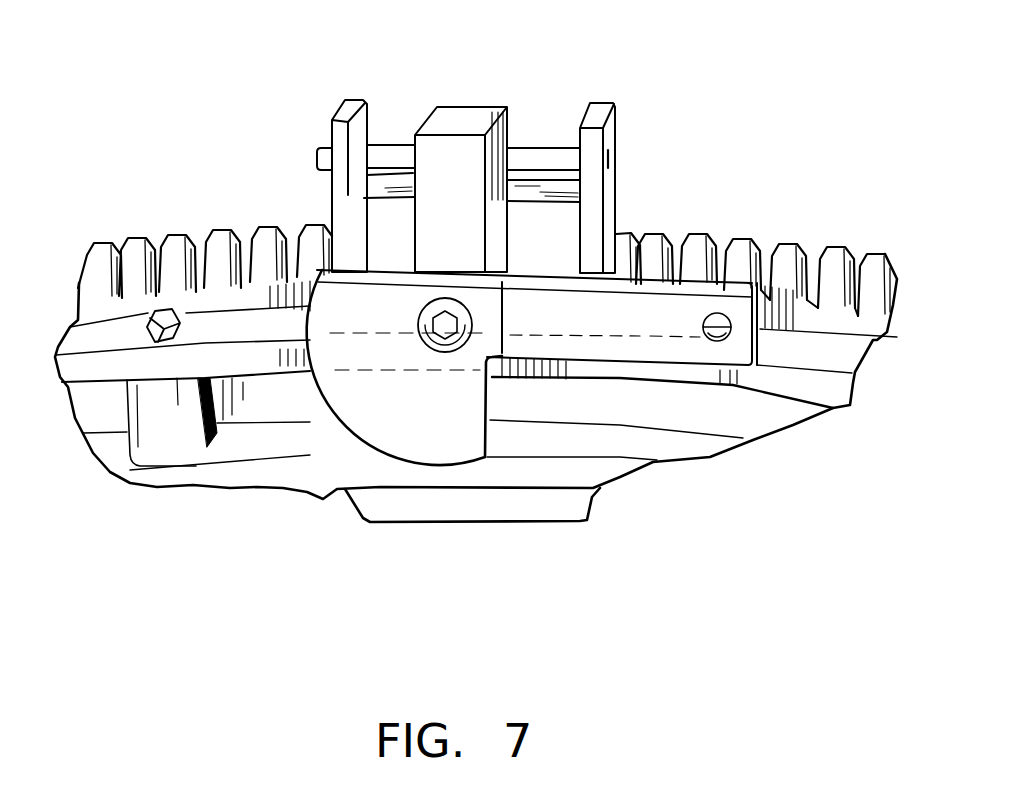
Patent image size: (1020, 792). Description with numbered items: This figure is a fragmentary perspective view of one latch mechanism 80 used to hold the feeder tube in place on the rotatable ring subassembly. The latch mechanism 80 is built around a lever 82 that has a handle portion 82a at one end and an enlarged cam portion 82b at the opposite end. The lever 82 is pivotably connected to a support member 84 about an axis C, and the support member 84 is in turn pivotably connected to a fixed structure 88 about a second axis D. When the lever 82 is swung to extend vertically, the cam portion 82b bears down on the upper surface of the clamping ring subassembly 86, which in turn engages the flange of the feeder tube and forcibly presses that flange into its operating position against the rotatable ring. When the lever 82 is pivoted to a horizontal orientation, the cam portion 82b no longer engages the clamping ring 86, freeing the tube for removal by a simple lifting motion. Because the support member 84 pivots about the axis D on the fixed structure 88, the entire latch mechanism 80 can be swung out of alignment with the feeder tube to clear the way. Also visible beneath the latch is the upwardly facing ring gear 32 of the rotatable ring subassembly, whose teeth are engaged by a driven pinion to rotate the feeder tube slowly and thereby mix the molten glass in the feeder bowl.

The ring gear 32 is at (176, 237).
The latch mechanism 80 is at (579, 73).
The lever 82 is at (662, 278).
The handle portion 82a is at (760, 263).
The cam portion 82b is at (373, 458).
The support member 84 is at (447, 167).
The clamping ring subassembly 86 is at (600, 487).
The fixed structure 88 is at (617, 198).
The axis C is at (448, 322).
The axis D is at (316, 157).